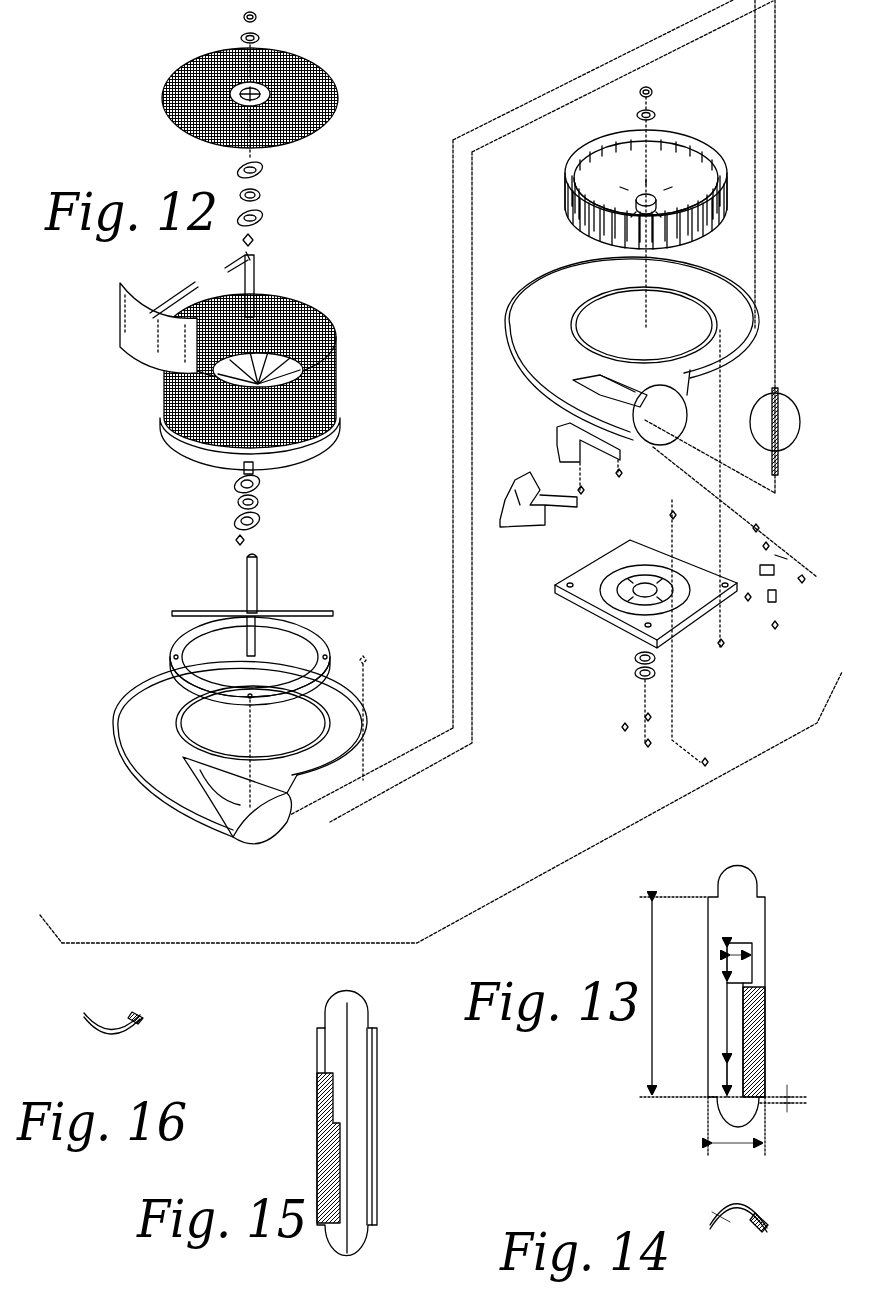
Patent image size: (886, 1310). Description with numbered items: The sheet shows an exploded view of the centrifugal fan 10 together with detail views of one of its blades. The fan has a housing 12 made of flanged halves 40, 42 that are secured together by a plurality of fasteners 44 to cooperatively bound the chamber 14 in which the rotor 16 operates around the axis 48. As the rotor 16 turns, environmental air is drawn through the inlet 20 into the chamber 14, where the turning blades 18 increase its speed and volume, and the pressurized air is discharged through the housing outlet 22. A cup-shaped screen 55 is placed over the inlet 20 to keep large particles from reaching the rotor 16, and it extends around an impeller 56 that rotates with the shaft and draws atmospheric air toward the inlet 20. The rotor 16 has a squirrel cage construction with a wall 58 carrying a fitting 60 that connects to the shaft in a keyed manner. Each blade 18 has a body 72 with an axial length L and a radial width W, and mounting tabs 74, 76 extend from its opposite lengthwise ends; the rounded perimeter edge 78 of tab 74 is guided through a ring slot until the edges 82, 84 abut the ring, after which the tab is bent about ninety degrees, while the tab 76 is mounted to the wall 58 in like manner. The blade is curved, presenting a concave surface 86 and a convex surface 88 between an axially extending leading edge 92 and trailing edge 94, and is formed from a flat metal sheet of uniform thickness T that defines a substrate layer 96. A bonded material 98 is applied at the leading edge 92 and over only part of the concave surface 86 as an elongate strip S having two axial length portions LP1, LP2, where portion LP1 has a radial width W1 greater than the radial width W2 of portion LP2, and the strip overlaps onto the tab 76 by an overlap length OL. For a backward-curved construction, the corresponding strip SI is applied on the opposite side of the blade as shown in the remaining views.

In FIG. 12, the centrifugal fan 10 is at (538, 72).
In FIG. 12, the housing 12 is at (326, 772).
In FIG. 12, the chamber 14 is at (737, 294).
In FIG. 12, the rotor 16 is at (714, 132).
In FIG. 13, the blade 18 is at (742, 925).
In FIG. 15, the blade 18 is at (350, 1143).
In FIG. 14, the blade 18 is at (720, 1225).
In FIG. 12, the inlet 20 is at (178, 715).
In FIG. 12, the housing outlet 22 is at (275, 822).
In FIG. 12, the flanged half 40 is at (163, 690).
In FIG. 12, the flanged half 42 is at (717, 310).
In FIG. 12, the fastener 44 is at (366, 663).
In FIG. 12, the axis 48 is at (555, 275).
In FIG. 12, the cup-shaped screen 55 is at (163, 413).
In FIG. 12, the impeller 56 is at (300, 300).
In FIG. 12, the wall 58 is at (718, 163).
In FIG. 12, the fitting 60 is at (640, 178).
In FIG. 13, the body 72 is at (750, 875).
In FIG. 15, the body 72 is at (358, 1013).
In FIG. 16, the body 72 is at (142, 1025).
In FIG. 14, the body 72 is at (765, 1213).
In FIG. 13, the mounting tab 74 is at (737, 872).
In FIG. 15, the mounting tab 74 is at (343, 995).
In FIG. 13, the mounting tab 76 is at (750, 1120).
In FIG. 15, the mounting tab 76 is at (350, 1258).
In FIG. 13, the rounded perimeter edge 78 is at (727, 870).
In FIG. 13, the edge 82 is at (712, 890).
In FIG. 13, the edge 84 is at (768, 892).
In FIG. 13, the concave surface 86 is at (730, 905).
In FIG. 16, the concave surface 86 is at (128, 1025).
In FIG. 14, the concave surface 86 is at (740, 1210).
In FIG. 15, the convex surface 88 is at (353, 1100).
In FIG. 16, the convex surface 88 is at (118, 1030).
In FIG. 14, the convex surface 88 is at (737, 1203).
In FIG. 13, the leading edge 92 is at (767, 1050).
In FIG. 15, the leading edge 92 is at (318, 1046).
In FIG. 16, the leading edge 92 is at (90, 1015).
In FIG. 14, the leading edge 92 is at (755, 1230).
In FIG. 13, the trailing edge 94 is at (707, 1007).
In FIG. 15, the trailing edge 94 is at (375, 1050).
In FIG. 16, the trailing edge 94 is at (138, 1015).
In FIG. 14, the trailing edge 94 is at (718, 1220).
In FIG. 13, the substrate layer 96 is at (720, 1073).
In FIG. 13, the bonded material 98 is at (765, 1010).
In FIG. 15, the bonded material 98 is at (318, 1092).
In FIG. 13, the axial length L is at (674, 995).
In FIG. 13, the radial width W is at (736, 1127).
In FIG. 13, the radial width W1 is at (723, 1083).
In FIG. 13, the radial width W2 is at (757, 957).
In FIG. 13, the axial length portion LP1 is at (737, 1066).
In FIG. 13, the axial length portion LP2 is at (720, 950).
In FIG. 13, the overlap length OL is at (723, 1088).
In FIG. 13, the strip S is at (762, 1022).
In FIG. 14, the strip S is at (760, 1226).
In FIG. 15, the strip SI is at (322, 1152).
In FIG. 16, the strip SI is at (88, 1032).
In FIG. 14, the thickness T is at (713, 1205).